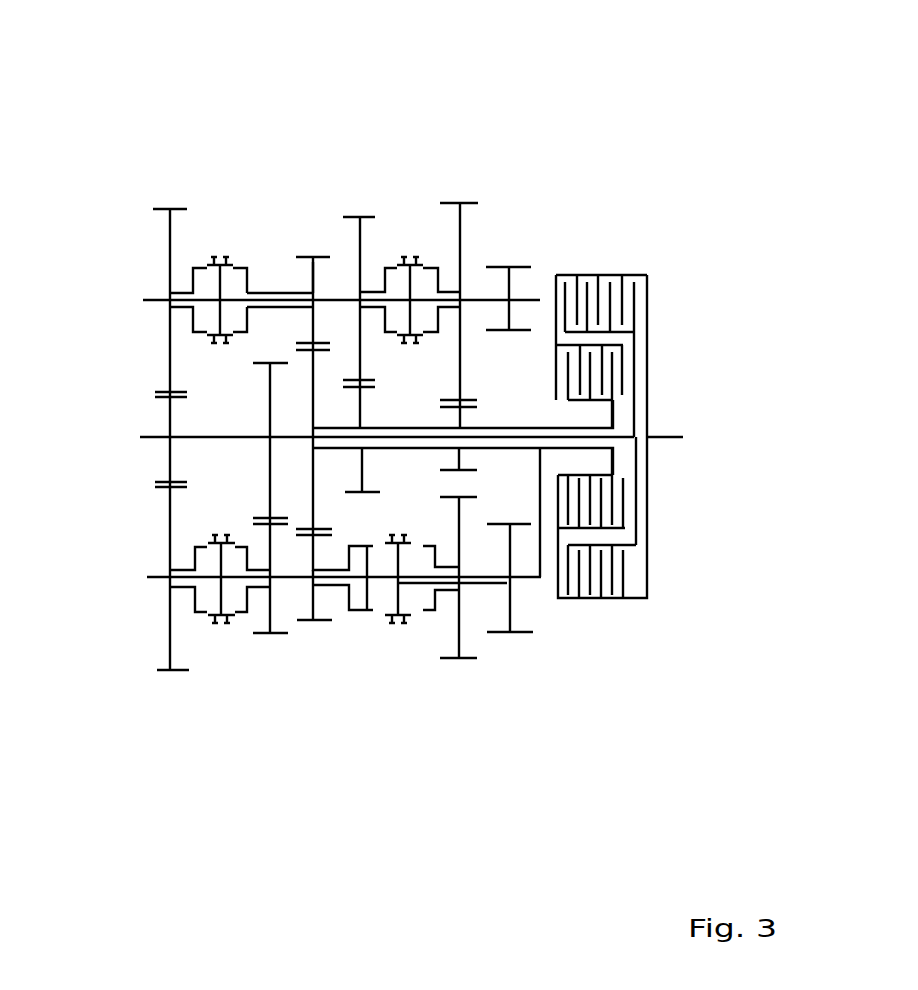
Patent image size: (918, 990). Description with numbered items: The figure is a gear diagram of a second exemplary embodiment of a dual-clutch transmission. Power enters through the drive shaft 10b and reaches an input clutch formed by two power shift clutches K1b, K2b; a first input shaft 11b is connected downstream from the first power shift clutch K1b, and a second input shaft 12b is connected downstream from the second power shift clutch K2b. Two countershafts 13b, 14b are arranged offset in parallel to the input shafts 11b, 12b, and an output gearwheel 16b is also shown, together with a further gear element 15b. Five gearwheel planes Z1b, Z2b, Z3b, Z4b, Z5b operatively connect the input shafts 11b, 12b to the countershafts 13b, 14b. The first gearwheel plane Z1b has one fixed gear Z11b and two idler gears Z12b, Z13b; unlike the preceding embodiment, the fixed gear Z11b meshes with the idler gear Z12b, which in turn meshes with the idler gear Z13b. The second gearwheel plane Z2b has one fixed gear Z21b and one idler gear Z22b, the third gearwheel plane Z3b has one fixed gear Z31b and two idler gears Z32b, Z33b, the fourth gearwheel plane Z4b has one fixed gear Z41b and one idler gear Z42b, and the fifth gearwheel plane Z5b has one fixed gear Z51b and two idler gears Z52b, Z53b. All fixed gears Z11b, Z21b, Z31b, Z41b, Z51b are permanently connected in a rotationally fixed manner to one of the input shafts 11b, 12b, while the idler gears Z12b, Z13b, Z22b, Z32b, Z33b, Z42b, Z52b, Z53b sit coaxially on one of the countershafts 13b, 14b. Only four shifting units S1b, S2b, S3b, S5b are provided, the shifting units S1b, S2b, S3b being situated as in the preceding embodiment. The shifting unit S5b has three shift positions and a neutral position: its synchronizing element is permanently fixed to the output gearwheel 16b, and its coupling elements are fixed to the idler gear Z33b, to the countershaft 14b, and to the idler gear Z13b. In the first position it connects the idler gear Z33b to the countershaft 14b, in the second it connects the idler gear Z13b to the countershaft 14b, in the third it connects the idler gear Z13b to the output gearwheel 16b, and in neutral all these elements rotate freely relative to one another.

The drive shaft 10b is at (678, 436).
The first input shaft 11b is at (624, 440).
The second input shaft 12b is at (558, 598).
The countershaft 13b is at (162, 293).
The countershaft 14b is at (147, 580).
The drive gear 15b is at (513, 283).
The output gearwheel 16b is at (513, 607).
The first power shift clutch K1b is at (634, 272).
The second power shift clutch K2b is at (590, 342).
The shifting unit S1b is at (222, 245).
The shifting unit S2b is at (411, 245).
The shifting unit S3b is at (223, 640).
The shifting unit S5b is at (412, 640).
The first gearwheel plane Z1b is at (460, 188).
The second gearwheel plane Z2b is at (362, 203).
The third gearwheel plane Z3b is at (313, 233).
The fourth gearwheel plane Z4b is at (268, 233).
The fifth gearwheel plane Z5b is at (168, 197).
The fixed gear Z11b is at (463, 452).
The idler gear Z12b is at (461, 238).
The idler gear Z13b is at (460, 625).
The fixed gear Z21b is at (362, 478).
The idler gear Z22b is at (357, 277).
The fixed gear Z31b is at (312, 512).
The idler gear Z32b is at (311, 278).
The idler gear Z33b is at (305, 592).
The fixed gear Z41b is at (268, 460).
The idler gear Z42b is at (268, 616).
The fixed gear Z51b is at (168, 457).
The idler gear Z52b is at (170, 357).
The idler gear Z53b is at (168, 553).